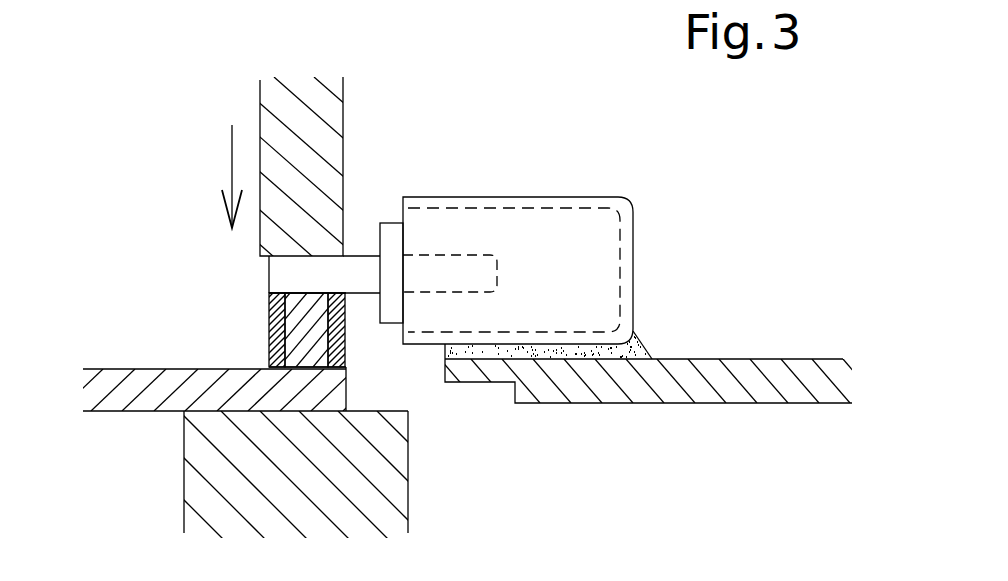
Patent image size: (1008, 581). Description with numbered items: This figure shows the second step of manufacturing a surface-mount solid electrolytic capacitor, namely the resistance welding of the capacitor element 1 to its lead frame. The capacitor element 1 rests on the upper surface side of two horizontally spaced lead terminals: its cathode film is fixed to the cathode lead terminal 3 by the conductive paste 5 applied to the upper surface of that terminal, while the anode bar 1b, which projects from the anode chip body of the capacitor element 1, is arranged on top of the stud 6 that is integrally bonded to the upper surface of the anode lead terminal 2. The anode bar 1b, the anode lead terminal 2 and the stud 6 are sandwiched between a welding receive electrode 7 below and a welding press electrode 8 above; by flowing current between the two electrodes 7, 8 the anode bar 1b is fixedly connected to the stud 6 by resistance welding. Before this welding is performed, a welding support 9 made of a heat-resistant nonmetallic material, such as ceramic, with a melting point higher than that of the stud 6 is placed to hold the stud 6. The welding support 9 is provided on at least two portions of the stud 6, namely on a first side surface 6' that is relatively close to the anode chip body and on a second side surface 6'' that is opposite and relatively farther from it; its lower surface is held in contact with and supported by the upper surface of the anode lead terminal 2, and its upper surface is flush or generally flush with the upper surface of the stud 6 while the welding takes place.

The capacitor element 1 is at (570, 190).
The anode bar 1b is at (355, 270).
The anode lead terminal 2 is at (115, 385).
The cathode lead terminal 3 is at (727, 388).
The conductive paste 5 is at (640, 345).
The stud 6 is at (264, 302).
The first side surface 6' is at (357, 420).
The second side surface 6'' is at (214, 405).
The welding receive electrode 7 is at (197, 480).
The welding press electrode 8 is at (313, 160).
The welding support 9 is at (269, 312).